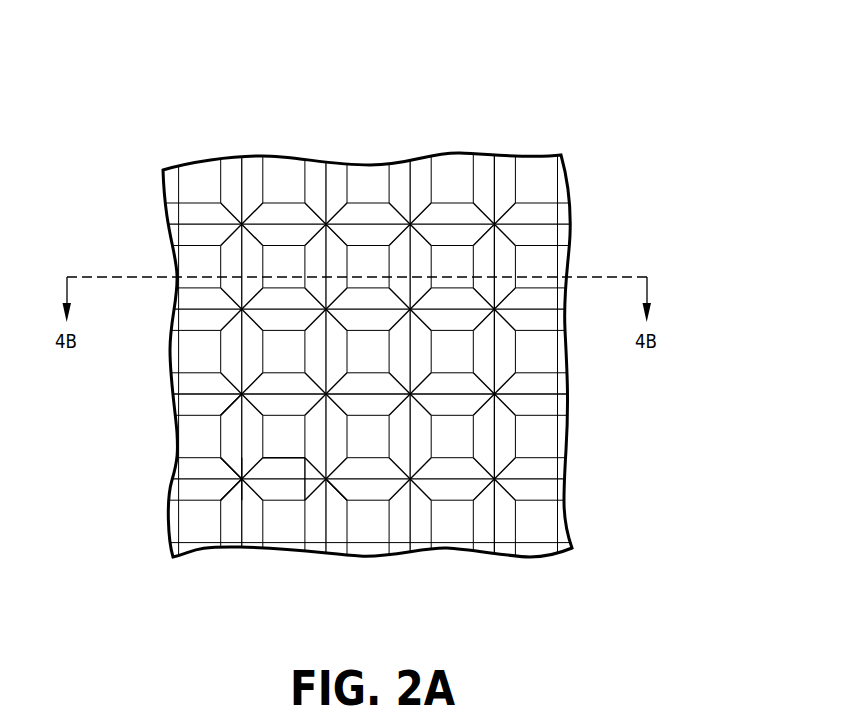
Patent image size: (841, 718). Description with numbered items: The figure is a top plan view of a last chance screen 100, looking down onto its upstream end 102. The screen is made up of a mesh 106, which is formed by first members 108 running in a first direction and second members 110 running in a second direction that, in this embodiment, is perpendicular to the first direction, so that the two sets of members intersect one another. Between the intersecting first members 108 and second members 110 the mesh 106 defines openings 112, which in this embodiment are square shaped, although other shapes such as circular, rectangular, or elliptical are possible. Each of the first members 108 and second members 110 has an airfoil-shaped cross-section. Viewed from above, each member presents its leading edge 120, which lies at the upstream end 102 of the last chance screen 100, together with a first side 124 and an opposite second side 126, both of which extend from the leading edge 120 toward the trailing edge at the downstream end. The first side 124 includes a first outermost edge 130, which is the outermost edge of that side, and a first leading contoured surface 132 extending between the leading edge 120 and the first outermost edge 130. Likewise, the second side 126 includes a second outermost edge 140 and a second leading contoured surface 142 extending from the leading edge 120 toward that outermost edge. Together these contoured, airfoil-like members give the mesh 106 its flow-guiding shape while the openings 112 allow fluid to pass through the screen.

The last chance screen 100 is at (185, 118).
The upstream end 102 is at (183, 213).
The mesh 106 is at (252, 262).
The first members 108 is at (500, 175).
The second members 110 is at (557, 472).
The openings 112 is at (463, 523).
The leading edge 120 is at (263, 487).
The first side 124 is at (295, 468).
The second side 126 is at (293, 493).
The first outermost edge 130 is at (285, 458).
The first leading contoured surface 132 is at (348, 502).
The second outermost edge 140 is at (288, 500).
The second leading contoured surface 142 is at (237, 505).